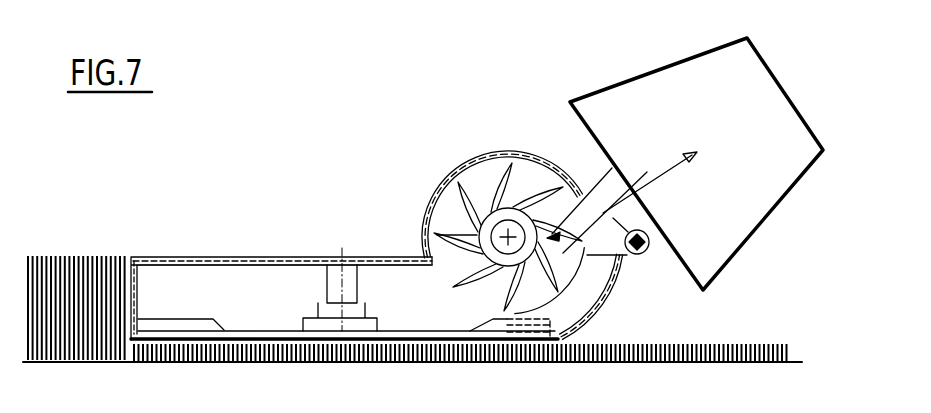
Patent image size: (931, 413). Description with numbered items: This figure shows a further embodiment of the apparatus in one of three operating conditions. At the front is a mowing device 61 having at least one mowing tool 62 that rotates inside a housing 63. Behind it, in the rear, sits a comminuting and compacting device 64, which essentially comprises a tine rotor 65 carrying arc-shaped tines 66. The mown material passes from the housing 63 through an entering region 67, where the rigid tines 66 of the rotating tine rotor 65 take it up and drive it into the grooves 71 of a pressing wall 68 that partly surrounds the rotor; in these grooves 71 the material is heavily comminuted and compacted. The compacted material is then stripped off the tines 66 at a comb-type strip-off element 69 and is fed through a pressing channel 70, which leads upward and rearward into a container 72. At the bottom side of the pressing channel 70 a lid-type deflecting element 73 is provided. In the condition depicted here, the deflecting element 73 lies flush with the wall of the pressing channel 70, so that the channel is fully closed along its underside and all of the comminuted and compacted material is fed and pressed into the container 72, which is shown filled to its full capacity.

The mowing device 61 is at (265, 252).
The mowing tool 62 is at (163, 320).
The housing 63 is at (192, 263).
The comminuting and compacting device 64 is at (472, 155).
The tine rotor 65 is at (430, 226).
The arc-shaped tines 66 is at (462, 182).
The entering region 67 is at (493, 308).
The pressing wall 68 is at (578, 328).
The comb-type strip-off element 69 is at (580, 200).
The pressing channel 70 is at (600, 213).
The grooves 71 is at (610, 291).
The container 72 is at (593, 92).
The lid-type deflecting element 73 is at (650, 253).